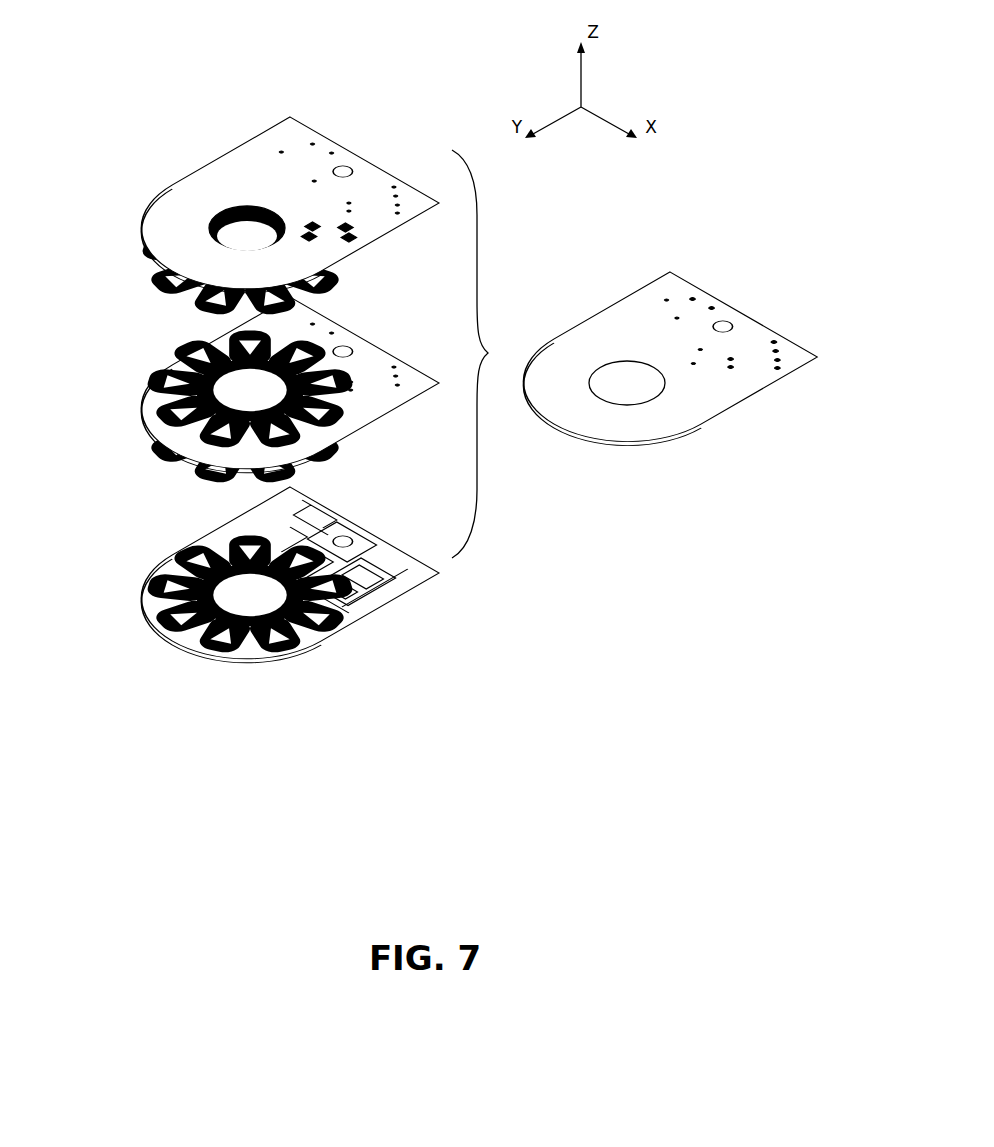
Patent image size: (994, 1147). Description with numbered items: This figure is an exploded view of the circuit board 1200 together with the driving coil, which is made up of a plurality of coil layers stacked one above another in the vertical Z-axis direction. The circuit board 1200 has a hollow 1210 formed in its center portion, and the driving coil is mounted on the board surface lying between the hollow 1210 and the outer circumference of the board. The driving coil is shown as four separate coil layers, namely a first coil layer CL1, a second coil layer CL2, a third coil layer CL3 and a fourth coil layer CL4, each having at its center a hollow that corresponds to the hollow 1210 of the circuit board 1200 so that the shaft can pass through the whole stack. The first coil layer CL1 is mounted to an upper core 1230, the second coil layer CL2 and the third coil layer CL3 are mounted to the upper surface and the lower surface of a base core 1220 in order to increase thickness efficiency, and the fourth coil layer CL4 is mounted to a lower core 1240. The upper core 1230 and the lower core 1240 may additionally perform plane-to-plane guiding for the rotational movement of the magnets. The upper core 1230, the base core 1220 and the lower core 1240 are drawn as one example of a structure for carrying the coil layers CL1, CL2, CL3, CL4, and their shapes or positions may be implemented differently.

The circuit board 1200 is at (649, 334).
The hollow 1210 is at (625, 378).
The base core 1220 is at (398, 380).
The upper core 1230 is at (320, 135).
The lower core 1240 is at (250, 660).
The first coil layer CL1 is at (138, 273).
The second coil layer CL2 is at (138, 366).
The third coil layer CL3 is at (167, 477).
The fourth coil layer CL4 is at (138, 575).